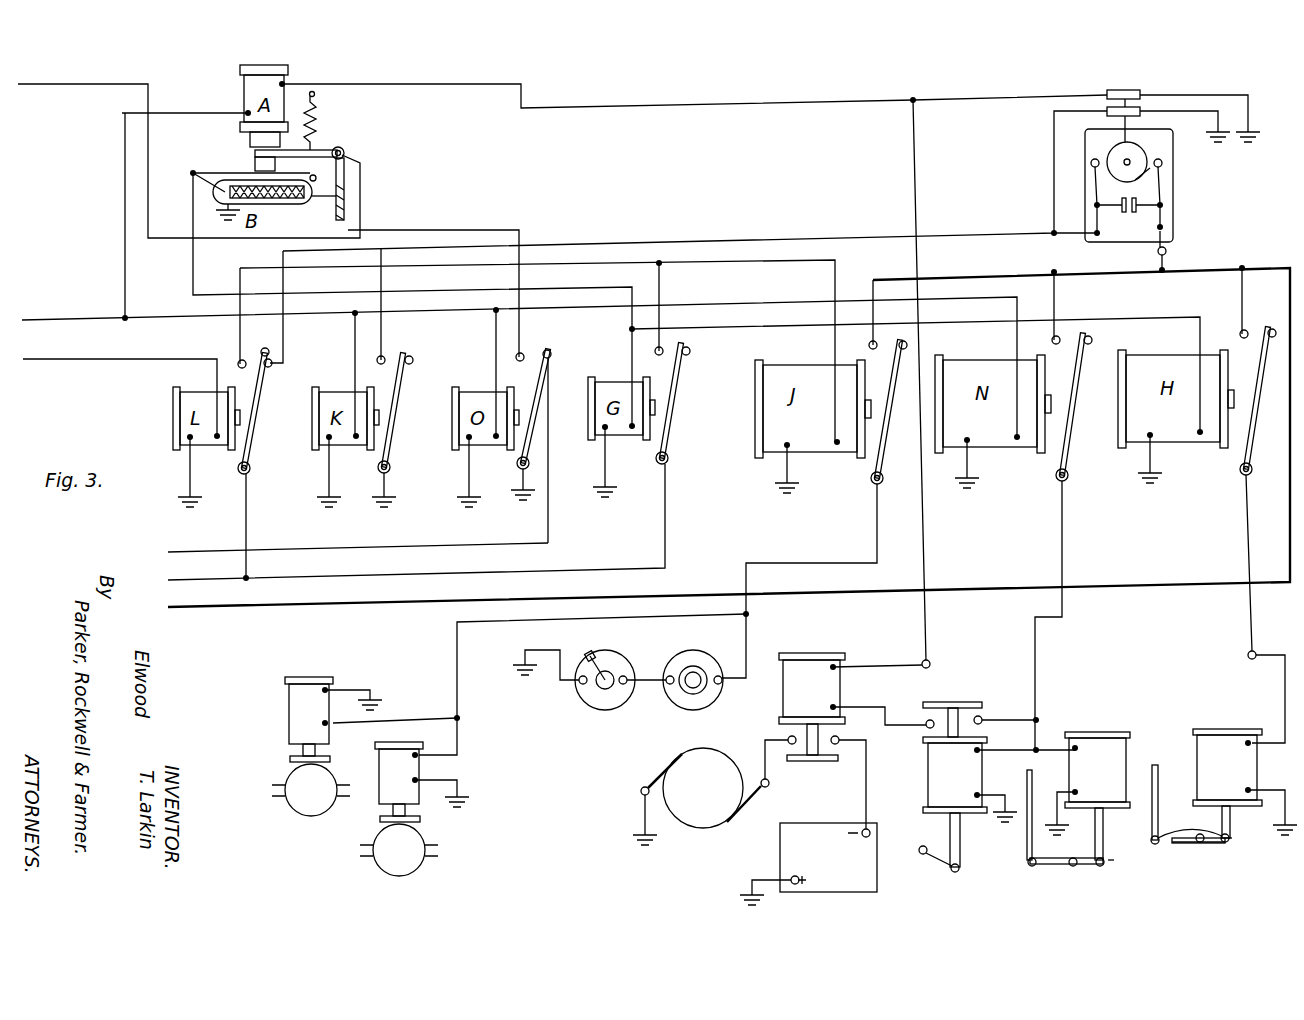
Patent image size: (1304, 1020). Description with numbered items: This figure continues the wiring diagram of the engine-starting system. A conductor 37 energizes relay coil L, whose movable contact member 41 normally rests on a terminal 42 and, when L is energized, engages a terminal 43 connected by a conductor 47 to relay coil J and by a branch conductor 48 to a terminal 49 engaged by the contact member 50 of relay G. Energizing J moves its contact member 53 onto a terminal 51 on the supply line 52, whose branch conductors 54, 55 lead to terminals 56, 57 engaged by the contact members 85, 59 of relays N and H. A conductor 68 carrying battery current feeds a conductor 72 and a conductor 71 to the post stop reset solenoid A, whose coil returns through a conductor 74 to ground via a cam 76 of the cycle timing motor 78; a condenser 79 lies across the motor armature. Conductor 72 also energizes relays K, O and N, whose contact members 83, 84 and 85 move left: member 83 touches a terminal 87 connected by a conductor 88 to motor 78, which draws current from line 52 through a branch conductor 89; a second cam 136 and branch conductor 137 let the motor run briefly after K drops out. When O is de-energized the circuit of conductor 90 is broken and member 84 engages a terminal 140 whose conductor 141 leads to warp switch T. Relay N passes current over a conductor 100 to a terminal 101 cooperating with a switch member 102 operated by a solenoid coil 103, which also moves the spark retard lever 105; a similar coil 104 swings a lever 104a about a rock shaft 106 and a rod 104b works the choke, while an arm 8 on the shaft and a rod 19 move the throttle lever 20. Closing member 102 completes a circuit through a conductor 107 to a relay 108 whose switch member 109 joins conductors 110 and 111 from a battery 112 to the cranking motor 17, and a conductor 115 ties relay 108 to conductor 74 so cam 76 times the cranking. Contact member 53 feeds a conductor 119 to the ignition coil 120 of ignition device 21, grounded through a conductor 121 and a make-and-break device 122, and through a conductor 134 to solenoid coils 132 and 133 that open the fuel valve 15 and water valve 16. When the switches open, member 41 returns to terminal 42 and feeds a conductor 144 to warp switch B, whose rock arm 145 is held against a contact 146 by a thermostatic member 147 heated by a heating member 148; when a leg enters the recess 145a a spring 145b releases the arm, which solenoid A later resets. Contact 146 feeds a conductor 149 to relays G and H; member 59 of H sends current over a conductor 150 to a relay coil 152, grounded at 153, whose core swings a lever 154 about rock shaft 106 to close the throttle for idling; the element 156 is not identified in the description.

The conductor 90 is at (78, 90).
The conductor 74 is at (633, 108).
The conductor 71 is at (124, 216).
The conductor 72 is at (70, 318).
The conductor 37 is at (110, 360).
The spring 145b is at (316, 110).
The rock arm 145 is at (341, 150).
The contact 146 is at (255, 162).
The heating member 148 is at (218, 193).
The thermostatic member 147 is at (304, 205).
The recess 145a is at (350, 216).
The conductor 149 is at (193, 276).
The conductor 88 is at (645, 247).
The conductor 47 is at (782, 264).
The branch conductor 48 is at (664, 290).
The supply main 52 is at (958, 280).
The cam 76 is at (1118, 88).
The second cam 136 is at (1142, 108).
The branch conductor 137 is at (1054, 172).
The cycle timing motor 78 is at (1150, 160).
The condenser 79 is at (1140, 214).
The branch conductor 89 is at (1166, 262).
The branch conductor 54 is at (1058, 306).
The branch conductor 55 is at (1240, 290).
The terminal 56 is at (1054, 342).
The terminal 57 is at (1248, 322).
The terminal 43 is at (255, 318).
The conductor 144 is at (283, 348).
The terminal 42 is at (274, 368).
The movable contact member 41 is at (259, 406).
The terminal 87 is at (388, 354).
The movable contact member 83 is at (396, 403).
The movable contact member 84 is at (551, 349).
The terminal 140 is at (553, 357).
The terminal 49 is at (656, 356).
The movable contact member 50 is at (684, 380).
The terminal 51 is at (869, 346).
The movable contact member 53 is at (882, 444).
The movable contact member 85 is at (1072, 434).
The movable contact member 59 is at (1250, 462).
The conductor 141 is at (412, 549).
The conductor 68 is at (596, 568).
The conductor 119 is at (812, 562).
The conductor 115 is at (927, 550).
The conductor 100 is at (1066, 536).
The conductor 150 is at (1246, 546).
The conductor 134 is at (456, 650).
The make-and-break device 122 is at (600, 664).
The ignition device 21 is at (656, 658).
The ignition coil 120 is at (704, 666).
The conductor 121 is at (648, 684).
The solenoid coil 132 is at (287, 708).
The fuel valve 15 is at (298, 812).
The solenoid coil 133 is at (422, 774).
The water valve 16 is at (386, 872).
The relay 108 is at (812, 688).
The conductor 107 is at (878, 704).
The switch member 109 is at (814, 762).
The conductor 111 is at (762, 756).
The cranking motor 17 is at (697, 796).
The conductor 110 is at (868, 790).
The battery 112 is at (808, 864).
The switch member 102 is at (948, 702).
The terminal 101 is at (982, 716).
The solenoid coil 103 is at (999, 779).
The spark retard lever 105 is at (921, 862).
The solenoid coil 104 is at (1095, 740).
The rod 104b is at (1026, 857).
The lever 104a is at (1044, 870).
The rock shaft 106 is at (1072, 868).
The throttle lever 20 is at (1123, 857).
The rod 19 is at (1158, 765).
The arm 8 is at (1180, 832).
The relay coil 152 is at (1232, 740).
The ground connection 153 is at (1292, 798).
The pivot 156 is at (1247, 840).
The lever 154 is at (1220, 850).